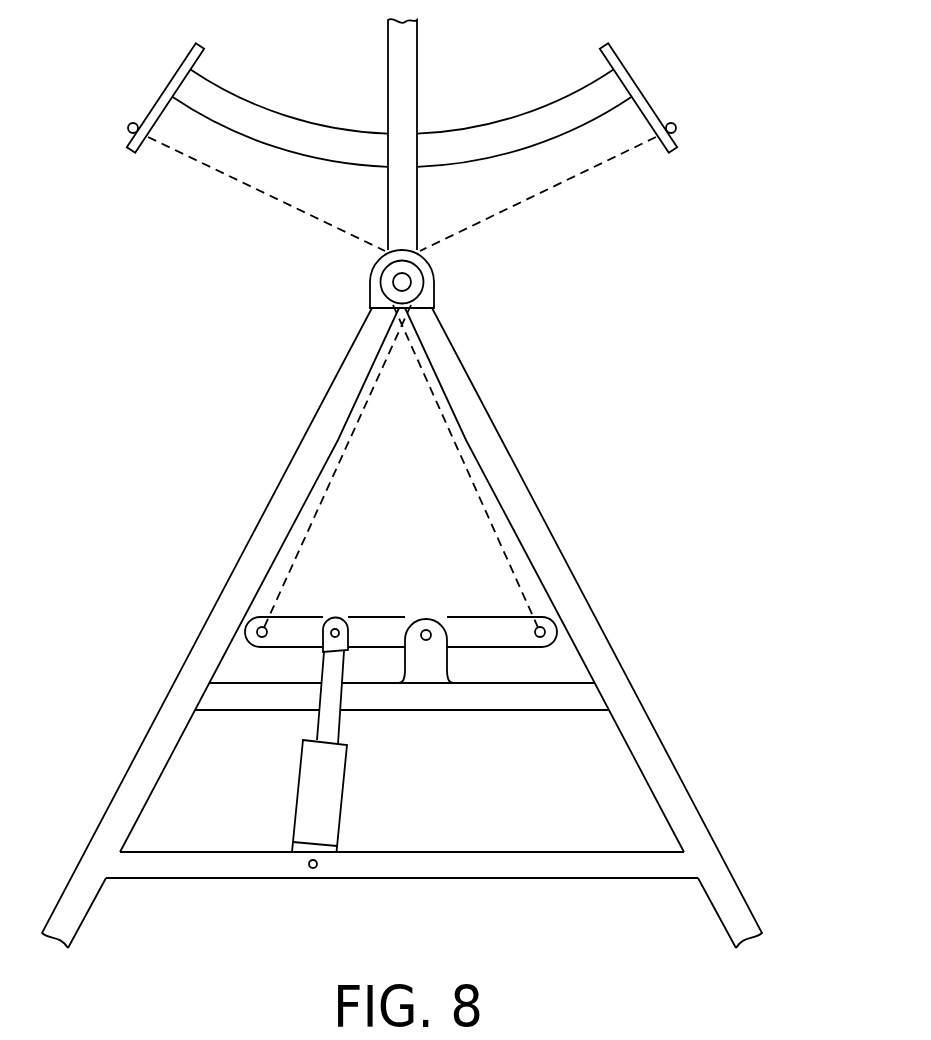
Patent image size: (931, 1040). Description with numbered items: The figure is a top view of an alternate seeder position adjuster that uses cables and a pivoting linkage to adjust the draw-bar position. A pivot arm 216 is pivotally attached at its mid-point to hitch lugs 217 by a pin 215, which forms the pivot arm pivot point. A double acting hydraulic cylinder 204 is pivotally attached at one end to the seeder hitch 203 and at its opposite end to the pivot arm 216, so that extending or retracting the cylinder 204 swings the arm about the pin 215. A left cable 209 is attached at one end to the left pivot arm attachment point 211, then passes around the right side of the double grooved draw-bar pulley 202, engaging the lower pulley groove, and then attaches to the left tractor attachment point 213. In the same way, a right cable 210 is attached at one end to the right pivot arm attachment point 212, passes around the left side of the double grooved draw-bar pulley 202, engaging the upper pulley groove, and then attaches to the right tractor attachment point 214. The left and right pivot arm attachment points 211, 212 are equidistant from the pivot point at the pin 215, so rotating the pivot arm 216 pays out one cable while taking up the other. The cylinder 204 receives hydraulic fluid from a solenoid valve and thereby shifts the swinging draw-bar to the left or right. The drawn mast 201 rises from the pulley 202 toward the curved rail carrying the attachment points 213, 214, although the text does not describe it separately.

The mast post 201 is at (417, 47).
The double grooved draw-bar pulley 202 is at (434, 287).
The seeder hitch 203 is at (687, 790).
The double acting hydraulic cylinder 204 is at (298, 778).
The left cable 209 is at (258, 194).
The right cable 210 is at (562, 194).
The left pivot arm attachment point 211 is at (241, 630).
The right pivot arm attachment point 212 is at (561, 639).
The left tractor attachment point 213 is at (142, 107).
The right tractor attachment point 214 is at (692, 130).
The pin 215 is at (425, 620).
The pivot arm 216 is at (495, 614).
The hitch lugs 217 is at (458, 657).